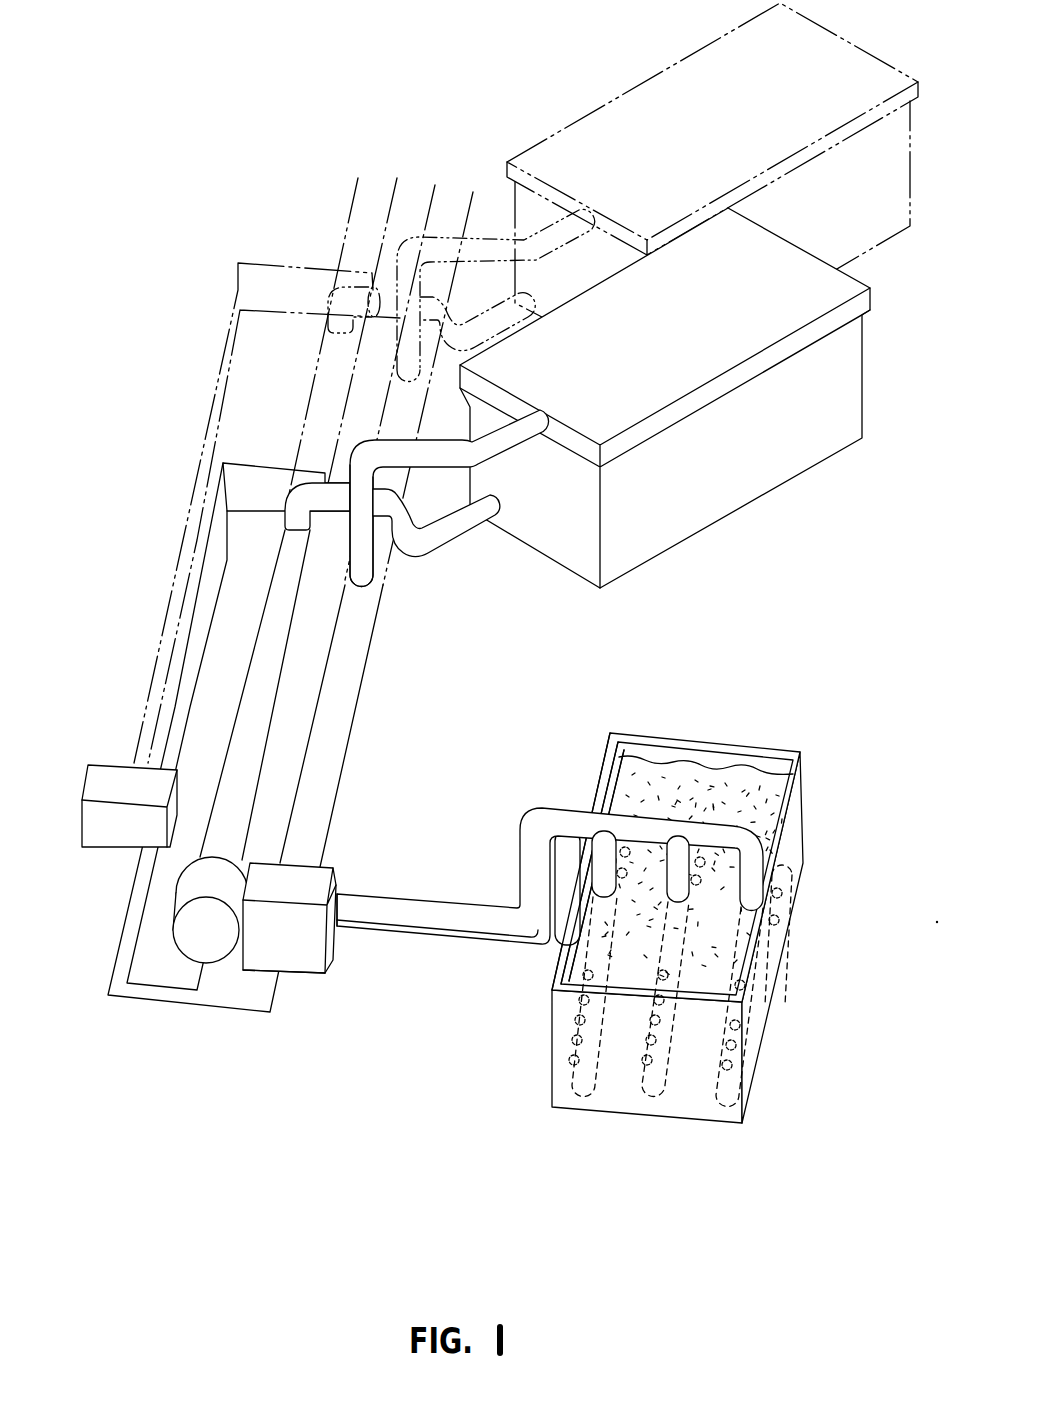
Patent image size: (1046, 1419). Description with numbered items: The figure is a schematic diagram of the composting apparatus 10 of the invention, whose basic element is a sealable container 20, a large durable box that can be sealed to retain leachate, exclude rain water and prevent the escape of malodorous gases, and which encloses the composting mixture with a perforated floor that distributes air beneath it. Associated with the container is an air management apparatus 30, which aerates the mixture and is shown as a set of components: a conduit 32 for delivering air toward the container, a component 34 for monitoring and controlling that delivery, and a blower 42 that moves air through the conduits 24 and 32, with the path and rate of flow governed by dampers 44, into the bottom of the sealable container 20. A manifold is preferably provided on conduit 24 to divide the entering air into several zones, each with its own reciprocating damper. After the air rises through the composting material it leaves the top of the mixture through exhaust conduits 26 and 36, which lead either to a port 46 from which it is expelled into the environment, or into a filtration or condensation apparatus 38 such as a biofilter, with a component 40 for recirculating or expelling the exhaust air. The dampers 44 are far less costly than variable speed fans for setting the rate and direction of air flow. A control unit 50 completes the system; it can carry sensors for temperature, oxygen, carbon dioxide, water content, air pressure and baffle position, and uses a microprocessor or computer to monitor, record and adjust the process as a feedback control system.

The composting apparatus 10 is at (467, 1102).
The sealable container 20 is at (753, 483).
The conduit 24 is at (470, 546).
The exhaust conduit 26 is at (503, 462).
The air management apparatus 30 is at (312, 873).
The conduit for delivering air to the sealable container 32 is at (252, 570).
The air monitoring and control component 34 is at (307, 966).
The exhaust conduit 36 is at (387, 627).
The filtration or condensation apparatus 38 is at (762, 933).
The exhaust air recirculating or expelling component 40 is at (440, 921).
The blower 42 is at (188, 942).
The dampers 44 is at (325, 500).
The port 46 is at (334, 924).
The control unit 50 is at (113, 768).